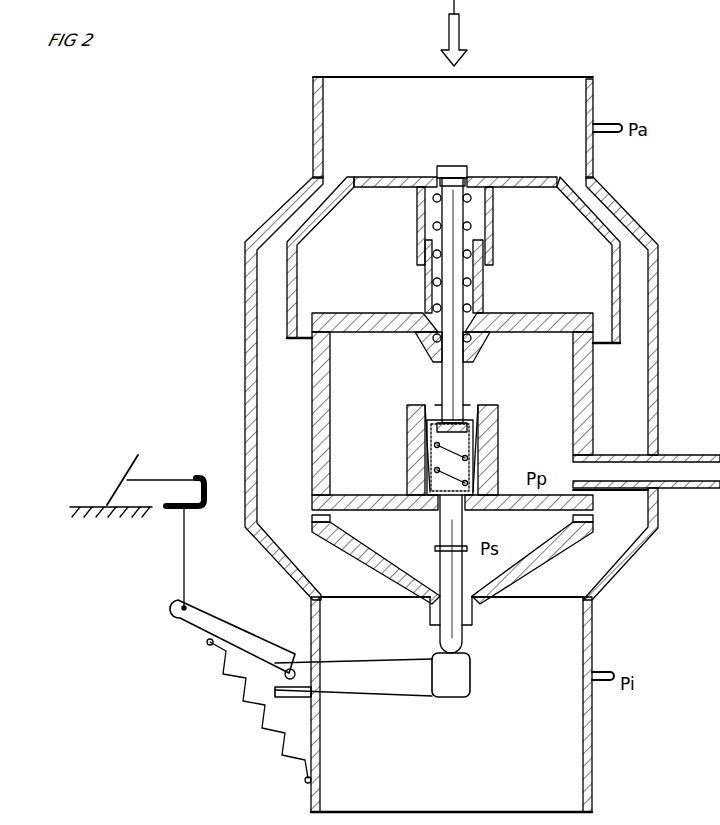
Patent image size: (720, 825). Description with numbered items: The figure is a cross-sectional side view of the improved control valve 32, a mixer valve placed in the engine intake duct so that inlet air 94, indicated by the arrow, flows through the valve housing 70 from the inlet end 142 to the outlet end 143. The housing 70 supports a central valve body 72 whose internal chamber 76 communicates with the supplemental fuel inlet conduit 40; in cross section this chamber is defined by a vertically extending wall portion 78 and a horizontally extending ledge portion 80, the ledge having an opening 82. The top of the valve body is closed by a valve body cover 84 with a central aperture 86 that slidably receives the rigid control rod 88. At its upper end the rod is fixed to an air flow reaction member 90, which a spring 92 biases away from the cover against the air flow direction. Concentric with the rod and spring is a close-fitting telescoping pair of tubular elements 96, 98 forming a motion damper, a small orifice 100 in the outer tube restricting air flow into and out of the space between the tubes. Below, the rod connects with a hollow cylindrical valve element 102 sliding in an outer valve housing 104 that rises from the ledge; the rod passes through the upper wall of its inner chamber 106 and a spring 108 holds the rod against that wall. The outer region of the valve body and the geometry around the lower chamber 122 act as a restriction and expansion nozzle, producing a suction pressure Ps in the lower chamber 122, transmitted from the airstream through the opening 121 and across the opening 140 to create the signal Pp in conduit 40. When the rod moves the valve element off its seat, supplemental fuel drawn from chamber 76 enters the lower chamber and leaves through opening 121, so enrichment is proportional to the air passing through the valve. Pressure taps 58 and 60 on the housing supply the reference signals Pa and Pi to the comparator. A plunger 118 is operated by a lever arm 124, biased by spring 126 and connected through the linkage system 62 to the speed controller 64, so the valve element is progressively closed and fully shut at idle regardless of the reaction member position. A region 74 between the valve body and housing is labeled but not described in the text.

The control valve 32 is at (260, 210).
The supplemental fuel inlet conduit 40 is at (690, 458).
The open conduit 58 is at (608, 123).
The open conduit 60 is at (608, 670).
The linkage system 62 is at (172, 604).
The speed controller 64 is at (130, 462).
The valve housing 70 is at (612, 212).
The valve body 72 is at (318, 380).
The annular chamber 74 is at (600, 450).
The internal chamber 76 is at (578, 398).
The vertically extending wall portion 78 is at (326, 402).
The horizontally extending ledge portion 80 is at (376, 502).
The opening 82 is at (468, 512).
The valve body cover 84 is at (530, 322).
The central aperture 86 is at (468, 340).
The rigid control rod 88 is at (440, 360).
The air flow reaction member 90 is at (538, 176).
The spring 92 is at (424, 283).
The inlet air 94 is at (462, 40).
The tubular element 96 is at (492, 222).
The inner tubular element 98 is at (484, 296).
The small orifice 100 is at (415, 217).
The valve element 102 is at (472, 462).
The outer valve housing 104 is at (406, 423).
The inner chamber 106 is at (490, 436).
The spring 108 is at (442, 455).
The plunger 118 is at (462, 648).
The opening 121 is at (314, 518).
The lower chamber 122 is at (530, 536).
The lever arm 124 is at (468, 686).
The spring 126 is at (270, 744).
The opening 140 is at (418, 505).
The inlet end 142 is at (313, 102).
The outlet end 143 is at (590, 785).